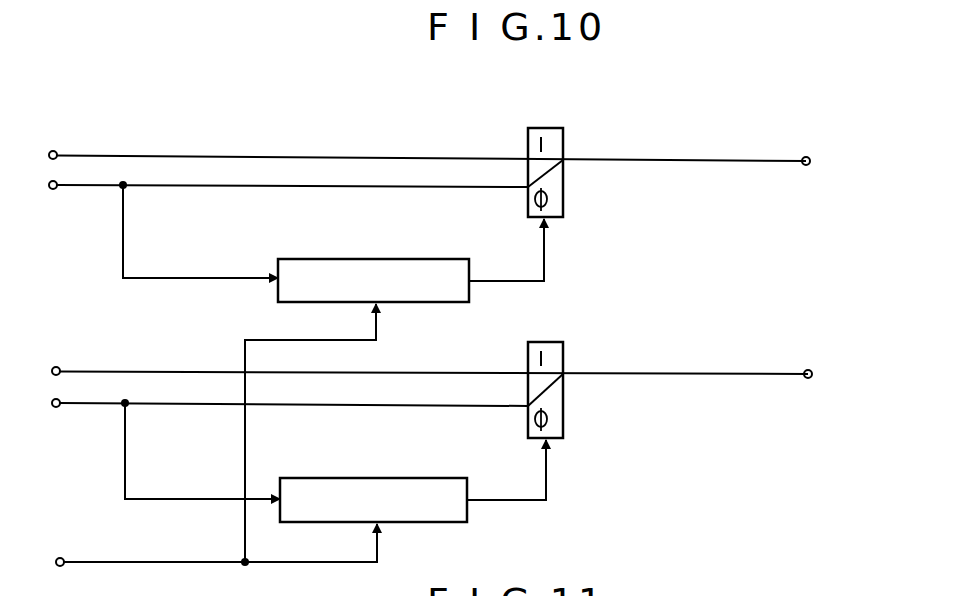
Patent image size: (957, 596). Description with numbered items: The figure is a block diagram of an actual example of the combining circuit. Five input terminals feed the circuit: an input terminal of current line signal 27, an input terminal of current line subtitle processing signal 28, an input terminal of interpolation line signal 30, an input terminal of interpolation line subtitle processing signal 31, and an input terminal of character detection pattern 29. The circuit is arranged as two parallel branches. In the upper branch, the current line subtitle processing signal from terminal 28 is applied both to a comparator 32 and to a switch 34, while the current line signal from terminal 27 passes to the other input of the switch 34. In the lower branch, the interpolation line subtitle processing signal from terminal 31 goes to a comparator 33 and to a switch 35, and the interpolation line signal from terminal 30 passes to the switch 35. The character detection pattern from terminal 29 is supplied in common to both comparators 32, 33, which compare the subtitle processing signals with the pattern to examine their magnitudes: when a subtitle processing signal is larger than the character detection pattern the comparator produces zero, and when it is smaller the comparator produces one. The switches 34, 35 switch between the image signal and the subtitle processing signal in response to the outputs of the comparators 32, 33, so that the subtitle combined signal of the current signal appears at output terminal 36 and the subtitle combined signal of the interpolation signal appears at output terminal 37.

The input terminal of current line signal 27 is at (57, 151).
The input terminal of current line subtitle processing signal 28 is at (54, 190).
The input terminal of character detection pattern 29 is at (64, 557).
The input terminal of interpolation line signal 30 is at (59, 367).
The input terminal of interpolation line subtitle processing signal 31 is at (59, 400).
The comparator 32 is at (383, 258).
The comparator 33 is at (362, 478).
The switch 34 is at (545, 128).
The switch 35 is at (550, 342).
The output terminal of current signal subtitle combining signal 36 is at (804, 156).
The output terminal of interpolation signal subtitle processing signal 37 is at (807, 370).